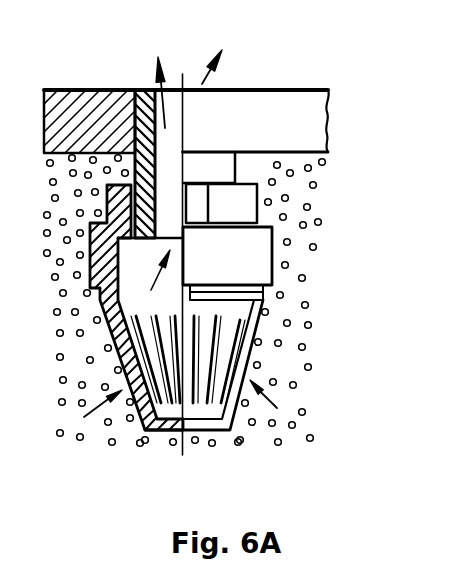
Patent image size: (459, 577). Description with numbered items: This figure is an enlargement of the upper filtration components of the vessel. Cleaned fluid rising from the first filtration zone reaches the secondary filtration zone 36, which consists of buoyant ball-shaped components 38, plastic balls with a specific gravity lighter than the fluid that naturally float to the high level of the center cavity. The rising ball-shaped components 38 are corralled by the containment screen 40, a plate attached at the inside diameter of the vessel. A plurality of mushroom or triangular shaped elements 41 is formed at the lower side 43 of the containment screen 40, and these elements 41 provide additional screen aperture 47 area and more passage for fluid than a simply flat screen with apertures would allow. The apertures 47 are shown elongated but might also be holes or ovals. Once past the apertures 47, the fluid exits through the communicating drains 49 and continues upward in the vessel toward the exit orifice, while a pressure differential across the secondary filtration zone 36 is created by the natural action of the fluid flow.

The secondary filtration zone 36 is at (280, 362).
The buoyant ball-shaped components 38 is at (283, 218).
The containment screen 40 is at (313, 120).
The mushroom or triangular shaped elements 41 is at (182, 432).
The lower side of the containment screen 43 is at (293, 156).
The screen aperture 47 is at (211, 403).
The communicating drains 49 is at (201, 78).